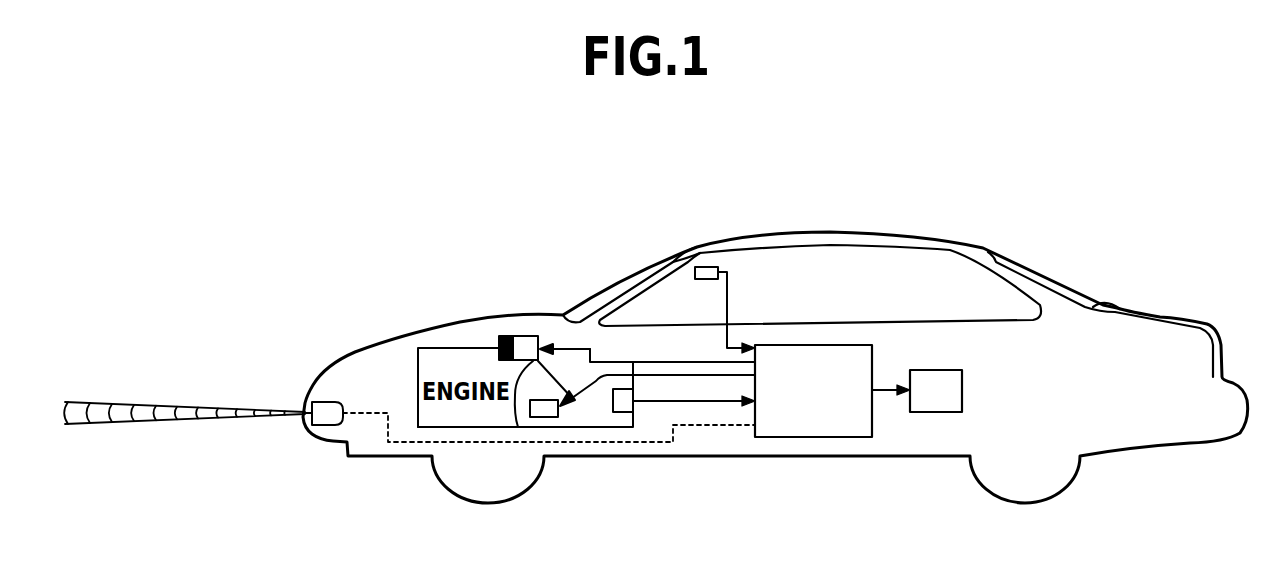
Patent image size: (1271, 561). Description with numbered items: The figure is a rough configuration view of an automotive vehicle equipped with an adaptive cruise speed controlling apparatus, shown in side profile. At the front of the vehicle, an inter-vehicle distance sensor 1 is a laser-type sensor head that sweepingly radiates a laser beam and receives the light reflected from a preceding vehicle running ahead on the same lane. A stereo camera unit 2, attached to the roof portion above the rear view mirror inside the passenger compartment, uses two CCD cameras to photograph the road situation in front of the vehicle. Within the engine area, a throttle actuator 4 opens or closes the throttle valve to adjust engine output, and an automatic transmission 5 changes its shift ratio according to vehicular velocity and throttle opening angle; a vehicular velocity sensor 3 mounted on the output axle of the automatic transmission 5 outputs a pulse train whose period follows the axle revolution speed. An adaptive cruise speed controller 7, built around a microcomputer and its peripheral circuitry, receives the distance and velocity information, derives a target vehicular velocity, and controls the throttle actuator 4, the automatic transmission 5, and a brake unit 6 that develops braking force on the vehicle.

The inter-vehicle distance sensor 1 is at (328, 415).
The stereo camera unit 2 is at (680, 263).
The vehicular velocity sensor 3 is at (632, 405).
The throttle actuator 4 is at (527, 343).
The automatic transmission 5 is at (585, 412).
The brake unit 6 is at (927, 412).
The adaptive cruise speed controller 7 is at (833, 437).